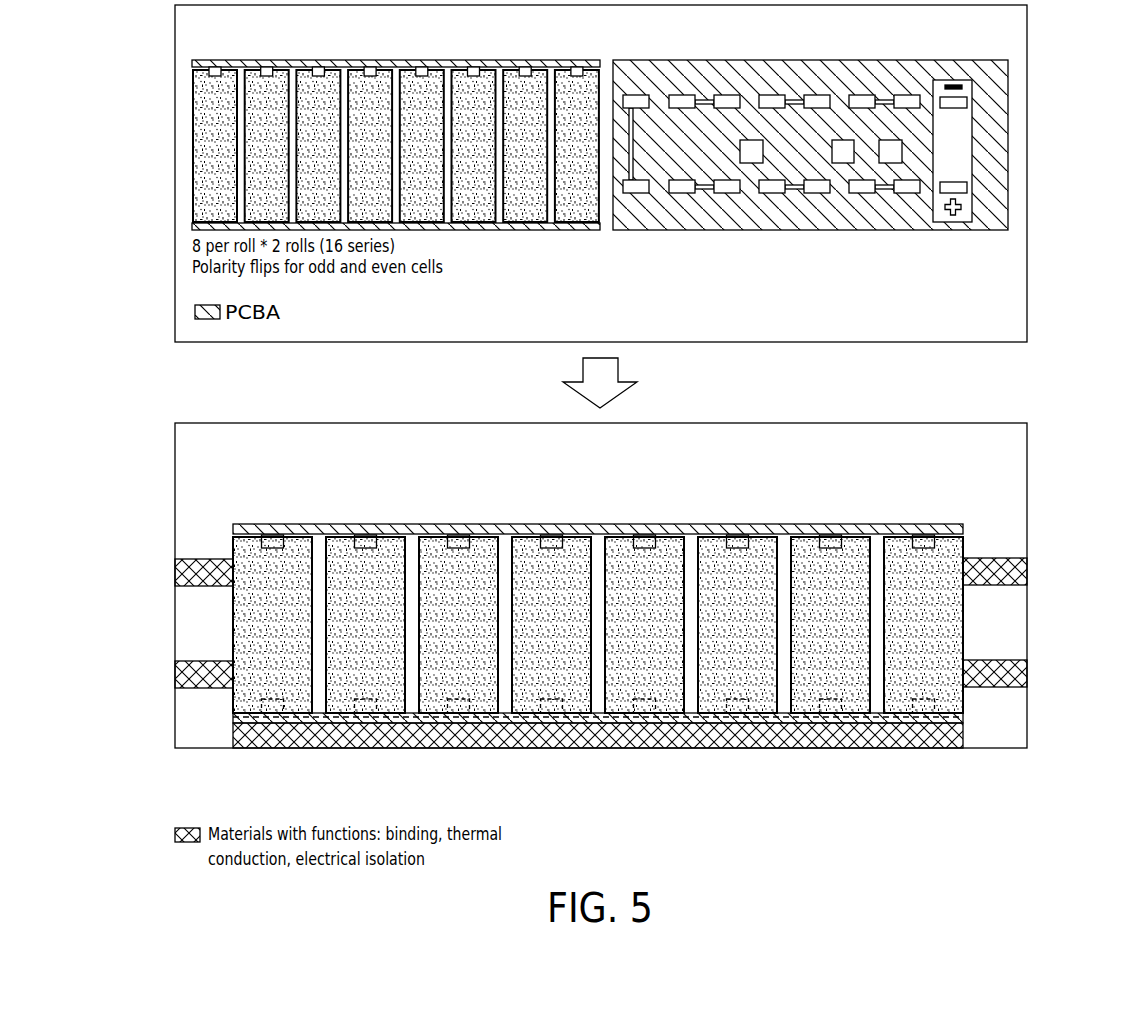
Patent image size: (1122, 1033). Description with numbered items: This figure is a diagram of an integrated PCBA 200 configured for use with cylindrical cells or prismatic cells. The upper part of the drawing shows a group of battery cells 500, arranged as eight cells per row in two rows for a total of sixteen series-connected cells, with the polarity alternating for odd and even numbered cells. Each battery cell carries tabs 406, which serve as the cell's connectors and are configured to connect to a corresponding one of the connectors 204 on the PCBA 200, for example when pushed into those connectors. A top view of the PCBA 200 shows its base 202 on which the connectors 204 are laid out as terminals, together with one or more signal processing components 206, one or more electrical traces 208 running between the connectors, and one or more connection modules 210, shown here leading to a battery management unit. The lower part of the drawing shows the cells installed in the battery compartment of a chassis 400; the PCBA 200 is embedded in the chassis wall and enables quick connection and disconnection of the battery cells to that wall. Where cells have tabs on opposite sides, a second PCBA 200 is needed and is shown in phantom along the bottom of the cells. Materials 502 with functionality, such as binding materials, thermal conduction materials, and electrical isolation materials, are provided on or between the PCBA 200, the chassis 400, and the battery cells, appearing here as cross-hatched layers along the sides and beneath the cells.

The battery cells 500 is at (138, 82).
The tabs 406 is at (213, 66).
The PCBA 200 is at (541, 59).
The base 202 is at (707, 151).
The connectors 204 is at (683, 194).
The signal processing components 206 is at (764, 148).
The electrical traces 208 is at (792, 96).
The connection modules 210 is at (952, 223).
The chassis 400 is at (617, 505).
The materials with functionality 502 is at (175, 572).